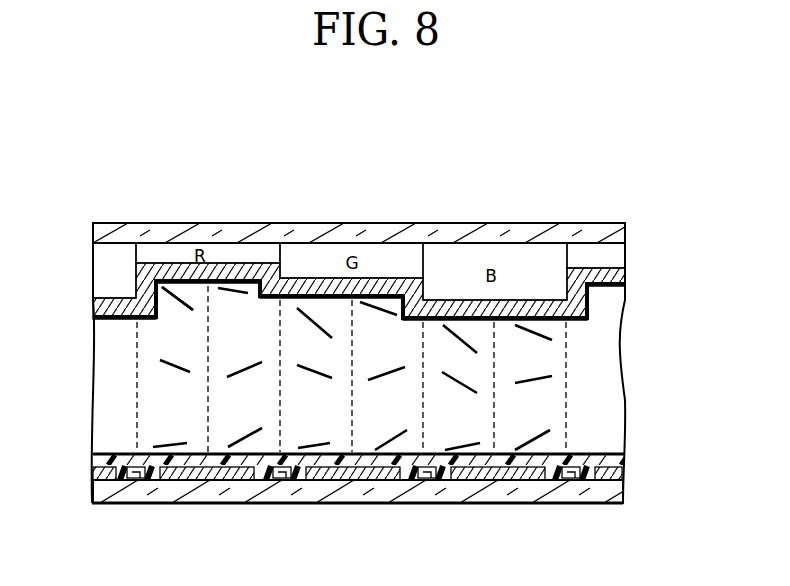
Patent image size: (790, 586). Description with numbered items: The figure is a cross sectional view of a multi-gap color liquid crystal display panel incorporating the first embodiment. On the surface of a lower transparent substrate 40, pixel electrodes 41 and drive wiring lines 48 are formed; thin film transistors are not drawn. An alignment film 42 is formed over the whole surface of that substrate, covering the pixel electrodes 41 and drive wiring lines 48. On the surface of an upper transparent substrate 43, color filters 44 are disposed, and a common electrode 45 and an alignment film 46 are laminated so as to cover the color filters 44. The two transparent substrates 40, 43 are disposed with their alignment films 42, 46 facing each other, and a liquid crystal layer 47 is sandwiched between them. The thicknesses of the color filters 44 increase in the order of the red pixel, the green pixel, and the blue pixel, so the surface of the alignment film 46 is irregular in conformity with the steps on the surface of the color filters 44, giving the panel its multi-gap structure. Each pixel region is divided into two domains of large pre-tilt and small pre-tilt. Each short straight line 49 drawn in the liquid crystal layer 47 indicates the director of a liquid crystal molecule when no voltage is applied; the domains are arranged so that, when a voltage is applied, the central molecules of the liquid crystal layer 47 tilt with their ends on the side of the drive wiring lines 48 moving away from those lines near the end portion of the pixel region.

The transparent substrate 40 is at (622, 492).
The pixel electrodes 41 is at (624, 472).
The alignment film 42 is at (622, 464).
The transparent substrate 43 is at (618, 242).
The color filters 44 is at (612, 256).
The common electrode 45 is at (622, 275).
The alignment film 46 is at (626, 290).
The liquid crystal layer 47 is at (600, 372).
The drive wiring lines 48 is at (136, 480).
The short straight line 49 is at (178, 366).